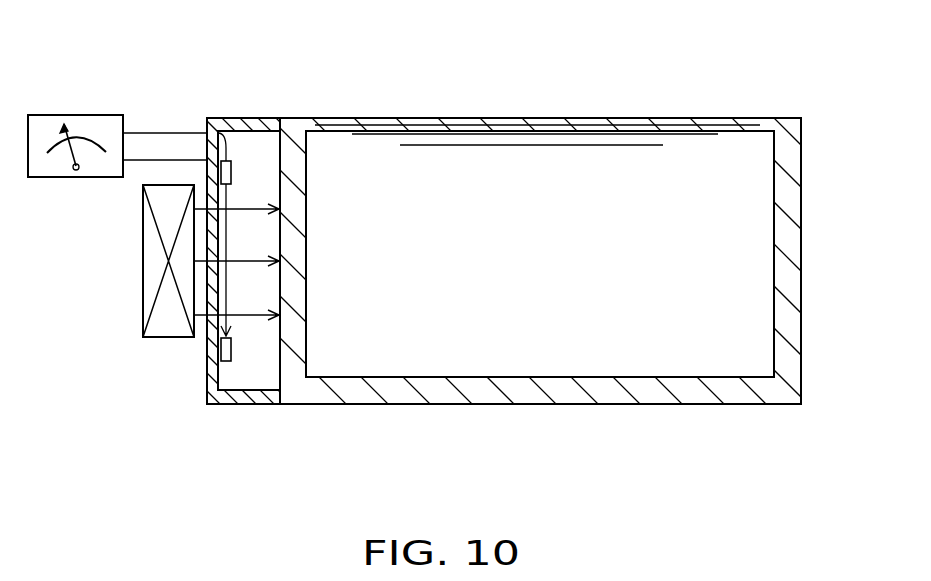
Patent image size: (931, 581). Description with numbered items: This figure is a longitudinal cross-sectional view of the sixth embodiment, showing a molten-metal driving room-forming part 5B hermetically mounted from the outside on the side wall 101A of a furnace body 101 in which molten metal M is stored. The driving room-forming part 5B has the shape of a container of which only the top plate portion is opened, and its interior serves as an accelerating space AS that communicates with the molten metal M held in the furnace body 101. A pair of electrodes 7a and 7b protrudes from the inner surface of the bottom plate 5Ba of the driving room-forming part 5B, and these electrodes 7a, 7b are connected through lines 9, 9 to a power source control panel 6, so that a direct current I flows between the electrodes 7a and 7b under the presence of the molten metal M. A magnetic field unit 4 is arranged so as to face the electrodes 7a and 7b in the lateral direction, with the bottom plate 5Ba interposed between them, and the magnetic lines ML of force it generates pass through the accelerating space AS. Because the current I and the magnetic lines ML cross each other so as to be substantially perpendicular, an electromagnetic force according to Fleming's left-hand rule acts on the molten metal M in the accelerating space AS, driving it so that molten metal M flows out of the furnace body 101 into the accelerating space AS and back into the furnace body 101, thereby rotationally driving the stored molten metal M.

The magnetic field unit 4 is at (141, 262).
The molten-metal driving room-forming part 5B is at (242, 118).
The bottom plate 5Ba is at (212, 385).
The power source control panel 6 is at (78, 115).
The electrode 7a is at (226, 158).
The electrode 7b is at (228, 362).
The line 9 is at (152, 133).
The accelerating space AS is at (264, 136).
The direct current I is at (229, 203).
The magnetic lines of force ML is at (245, 266).
The molten metal M is at (572, 265).
The furnace body 101 is at (801, 249).
The side wall 101A is at (293, 131).